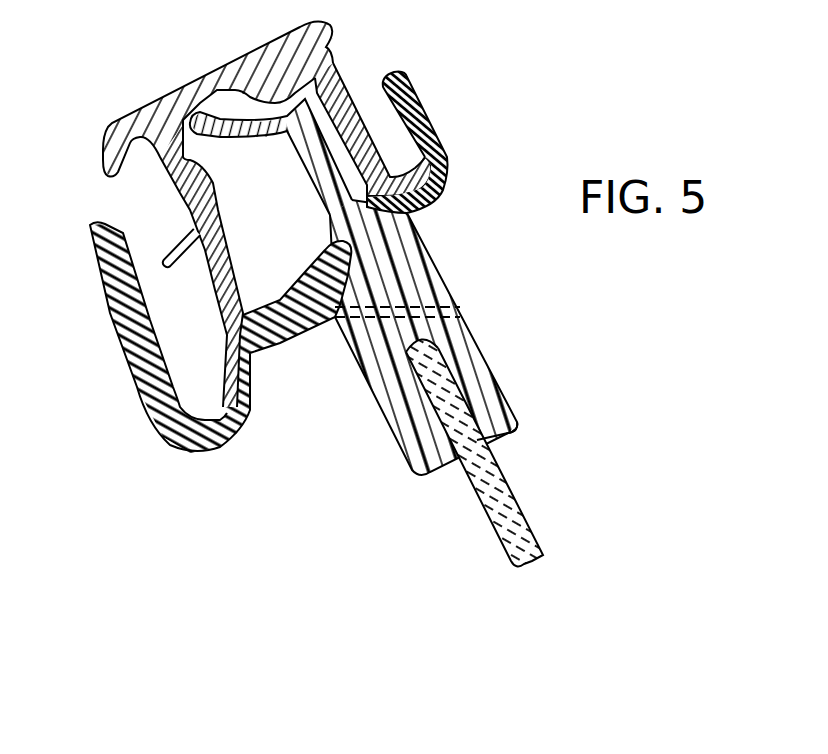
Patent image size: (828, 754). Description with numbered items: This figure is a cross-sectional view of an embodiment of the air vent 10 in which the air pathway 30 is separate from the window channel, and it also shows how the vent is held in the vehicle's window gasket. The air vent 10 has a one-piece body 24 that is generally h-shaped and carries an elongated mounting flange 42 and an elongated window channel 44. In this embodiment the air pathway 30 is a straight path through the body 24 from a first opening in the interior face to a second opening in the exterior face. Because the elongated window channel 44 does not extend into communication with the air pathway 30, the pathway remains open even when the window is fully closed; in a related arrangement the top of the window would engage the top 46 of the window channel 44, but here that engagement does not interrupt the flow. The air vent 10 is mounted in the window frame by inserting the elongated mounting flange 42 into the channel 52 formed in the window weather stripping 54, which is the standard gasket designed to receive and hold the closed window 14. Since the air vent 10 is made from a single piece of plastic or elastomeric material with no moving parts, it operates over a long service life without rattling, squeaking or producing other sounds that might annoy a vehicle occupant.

The air vent 10 is at (280, 443).
The closed window 14 is at (500, 503).
The body 24 is at (393, 263).
The air pathway 30 is at (430, 302).
The elongated mounting flange 42 is at (323, 164).
The elongated window channel 44 is at (478, 434).
The top 46 is at (446, 353).
The channel 52 is at (262, 203).
The window weather stripping 54 is at (346, 92).